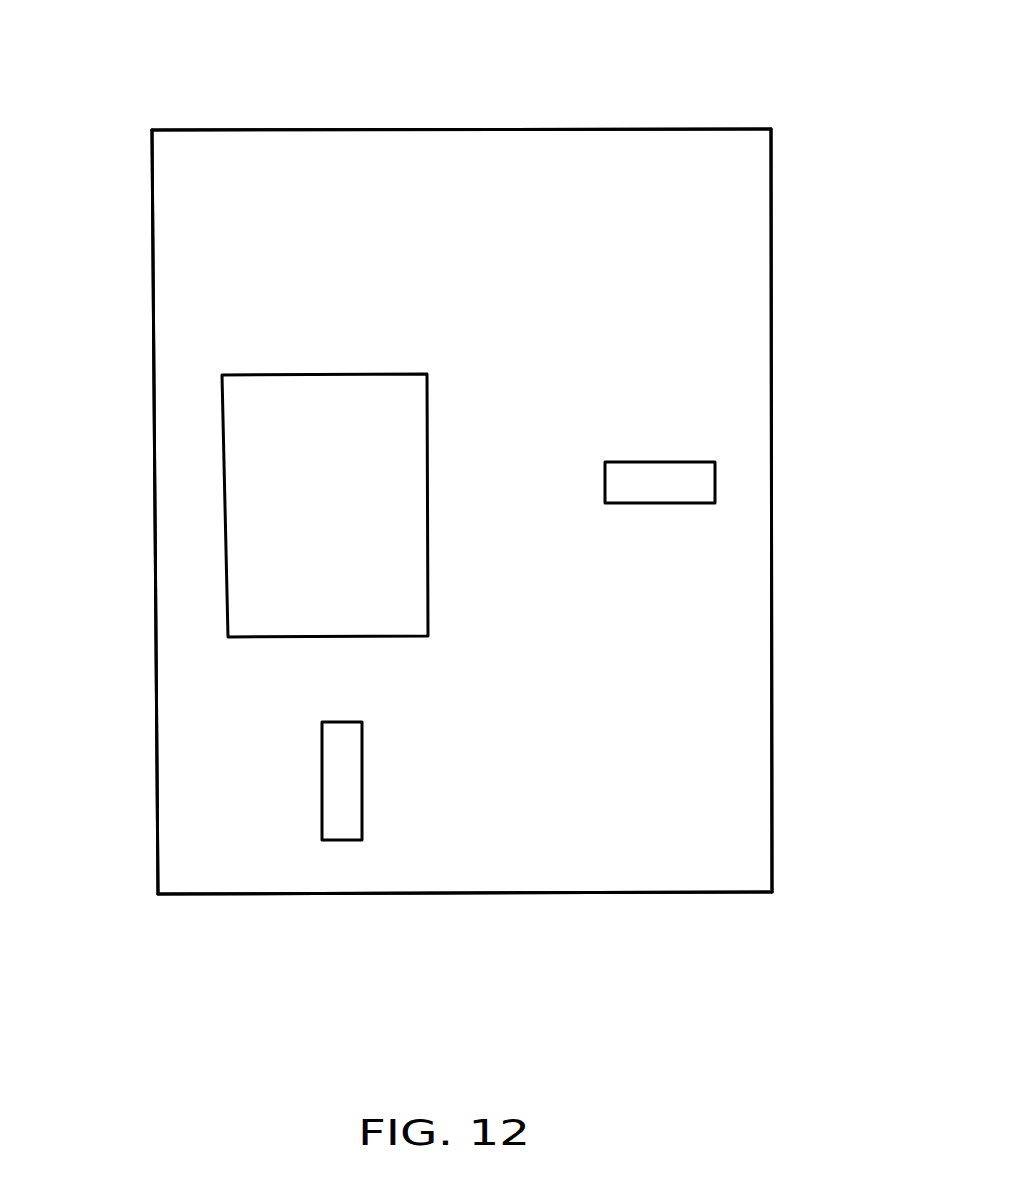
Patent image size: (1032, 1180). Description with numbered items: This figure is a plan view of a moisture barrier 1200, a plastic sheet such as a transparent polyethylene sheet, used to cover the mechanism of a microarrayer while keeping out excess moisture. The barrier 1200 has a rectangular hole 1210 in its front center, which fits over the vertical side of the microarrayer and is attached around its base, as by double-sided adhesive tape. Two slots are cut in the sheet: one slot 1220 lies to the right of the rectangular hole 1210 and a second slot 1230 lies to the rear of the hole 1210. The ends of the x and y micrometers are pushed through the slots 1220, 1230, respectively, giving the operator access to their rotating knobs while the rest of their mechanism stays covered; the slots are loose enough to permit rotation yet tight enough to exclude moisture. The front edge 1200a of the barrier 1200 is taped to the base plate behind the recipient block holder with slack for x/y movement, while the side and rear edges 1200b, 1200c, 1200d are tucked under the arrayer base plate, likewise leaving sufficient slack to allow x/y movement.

The moisture barrier 1200 is at (592, 98).
The front edge of barrier 1200a is at (155, 449).
The side edge of barrier 1200b is at (381, 130).
The rear edge of barrier 1200c is at (404, 896).
The side edge of barrier 1200d is at (774, 546).
The rectangular hole 1210 is at (350, 517).
The slot 1220 is at (340, 786).
The slot 1230 is at (664, 476).